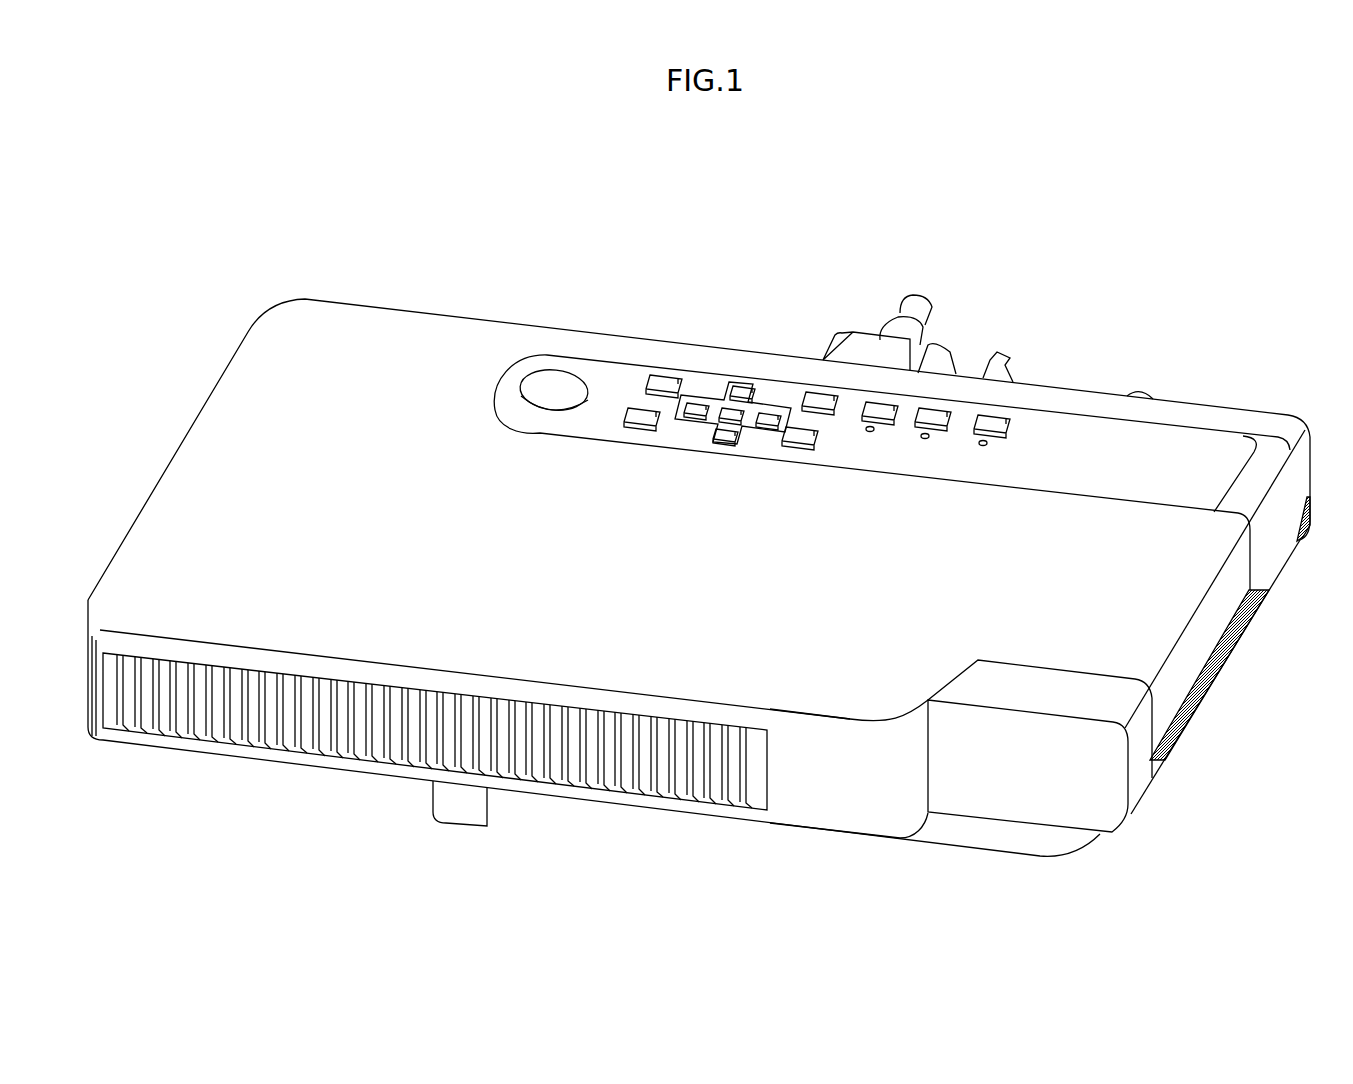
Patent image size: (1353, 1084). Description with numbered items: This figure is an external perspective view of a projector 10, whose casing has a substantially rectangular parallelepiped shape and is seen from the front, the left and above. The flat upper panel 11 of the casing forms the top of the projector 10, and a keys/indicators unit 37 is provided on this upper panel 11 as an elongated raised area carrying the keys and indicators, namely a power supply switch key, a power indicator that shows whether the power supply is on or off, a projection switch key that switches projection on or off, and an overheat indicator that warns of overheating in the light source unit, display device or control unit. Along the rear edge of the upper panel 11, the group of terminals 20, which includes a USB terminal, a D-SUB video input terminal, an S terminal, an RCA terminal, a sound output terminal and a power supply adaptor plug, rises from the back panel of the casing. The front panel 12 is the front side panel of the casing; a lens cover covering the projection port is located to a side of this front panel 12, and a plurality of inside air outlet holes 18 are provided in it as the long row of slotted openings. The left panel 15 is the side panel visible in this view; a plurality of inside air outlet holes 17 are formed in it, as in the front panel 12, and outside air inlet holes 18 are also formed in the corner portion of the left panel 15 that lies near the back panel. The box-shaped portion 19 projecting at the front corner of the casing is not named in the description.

The projector 10 is at (663, 247).
The upper panel 11 is at (455, 332).
The front panel 12 is at (815, 790).
The left panel 15 is at (1207, 627).
The inside air outlet holes 17 is at (1193, 718).
The inside air outlet holes / outside air inlet holes 18 is at (697, 795).
The projection lens housing 19 is at (1068, 800).
The terminals 20 is at (970, 289).
The keys/indicators unit 37 is at (755, 327).